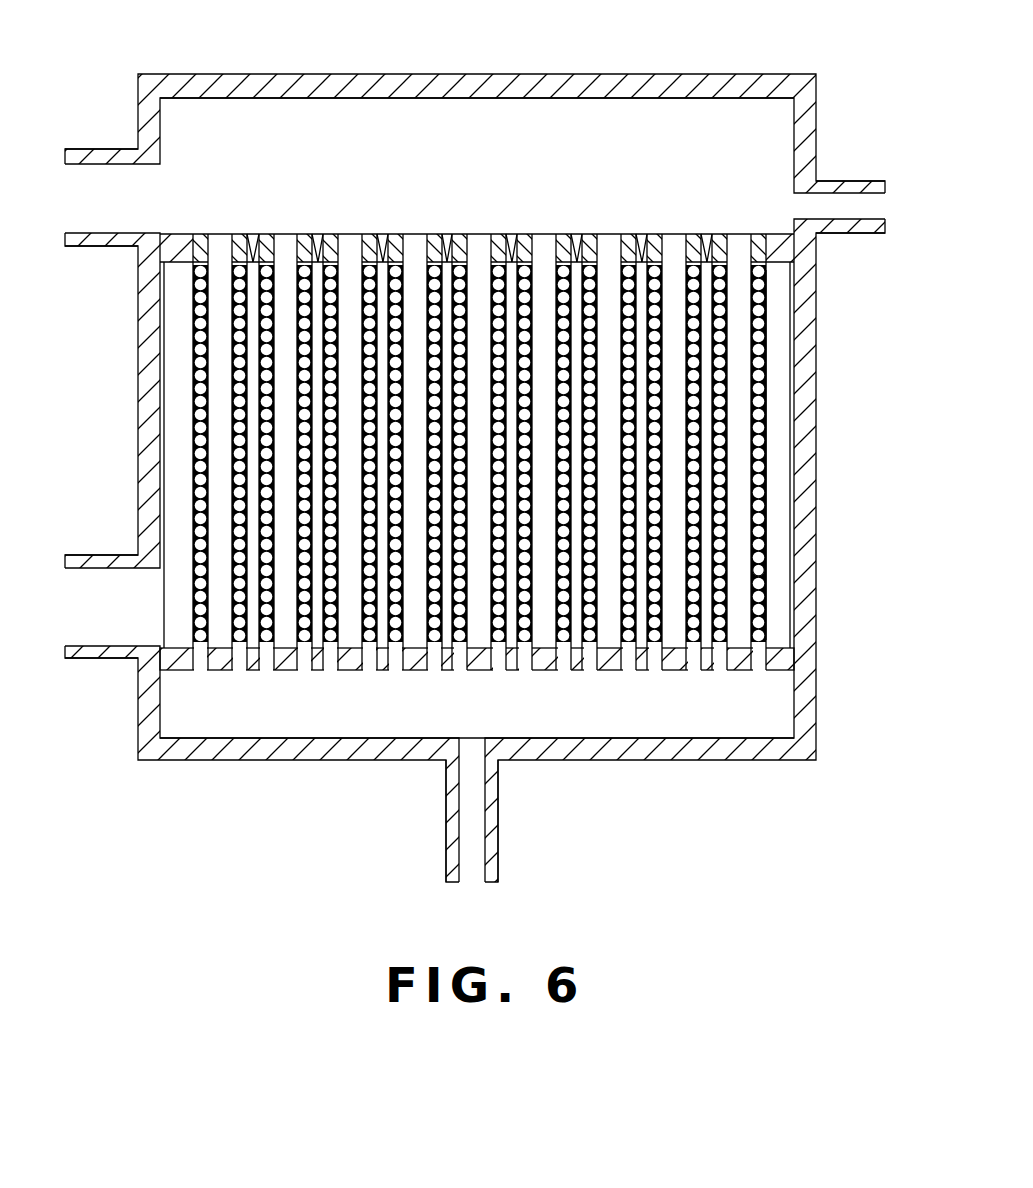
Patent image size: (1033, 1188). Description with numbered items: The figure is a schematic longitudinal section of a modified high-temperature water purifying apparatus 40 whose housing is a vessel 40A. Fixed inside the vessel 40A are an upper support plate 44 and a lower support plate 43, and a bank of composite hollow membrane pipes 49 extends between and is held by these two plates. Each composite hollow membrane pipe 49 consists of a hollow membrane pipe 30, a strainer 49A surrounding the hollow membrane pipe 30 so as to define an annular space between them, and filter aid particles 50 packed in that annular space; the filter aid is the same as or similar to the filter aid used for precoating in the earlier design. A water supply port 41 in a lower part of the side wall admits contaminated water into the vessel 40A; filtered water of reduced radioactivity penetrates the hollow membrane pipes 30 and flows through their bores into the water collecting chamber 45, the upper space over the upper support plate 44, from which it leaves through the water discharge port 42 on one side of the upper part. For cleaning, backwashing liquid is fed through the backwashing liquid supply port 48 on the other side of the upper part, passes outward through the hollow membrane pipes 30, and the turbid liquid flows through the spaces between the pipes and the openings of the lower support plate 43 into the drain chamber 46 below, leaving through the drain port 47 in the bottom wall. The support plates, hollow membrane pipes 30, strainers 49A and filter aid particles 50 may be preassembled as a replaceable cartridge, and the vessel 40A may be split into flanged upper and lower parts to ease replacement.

The high-temperature water purifying apparatus 40 is at (481, 448).
The vessel 40A is at (668, 90).
The water supply port 41 is at (99, 620).
The water discharge port 42 is at (103, 210).
The lower support plate 43 is at (345, 681).
The upper support plate 44 is at (320, 238).
The water collecting chamber 45 is at (500, 213).
The drain chamber 46 is at (491, 713).
The drain port 47 is at (474, 817).
The backwashing liquid supply port 48 is at (836, 206).
The composite hollow membrane pipe 49 is at (652, 424).
The strainer 49A is at (766, 492).
The hollow membrane pipe 30 is at (752, 456).
The filter aid particles 50 is at (758, 566).